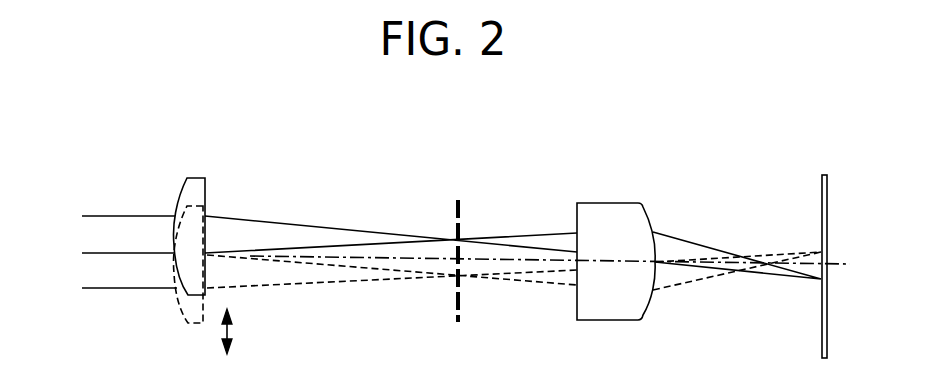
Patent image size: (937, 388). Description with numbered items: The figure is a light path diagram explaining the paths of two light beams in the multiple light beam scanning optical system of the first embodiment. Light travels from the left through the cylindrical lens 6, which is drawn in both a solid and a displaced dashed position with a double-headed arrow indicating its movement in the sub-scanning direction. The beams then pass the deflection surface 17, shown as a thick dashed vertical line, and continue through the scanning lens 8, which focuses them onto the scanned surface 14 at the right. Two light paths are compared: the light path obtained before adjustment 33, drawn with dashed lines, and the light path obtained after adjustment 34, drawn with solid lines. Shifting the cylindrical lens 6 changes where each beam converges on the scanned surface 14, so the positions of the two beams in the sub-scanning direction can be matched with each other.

The cylindrical lens 6 is at (195, 188).
The scanning lens 8 is at (618, 210).
The scanned surface 14 is at (829, 199).
The deflection surface 17 is at (456, 200).
The light path obtained before adjustment 33 is at (776, 248).
The light path obtained after adjustment 34 is at (780, 278).